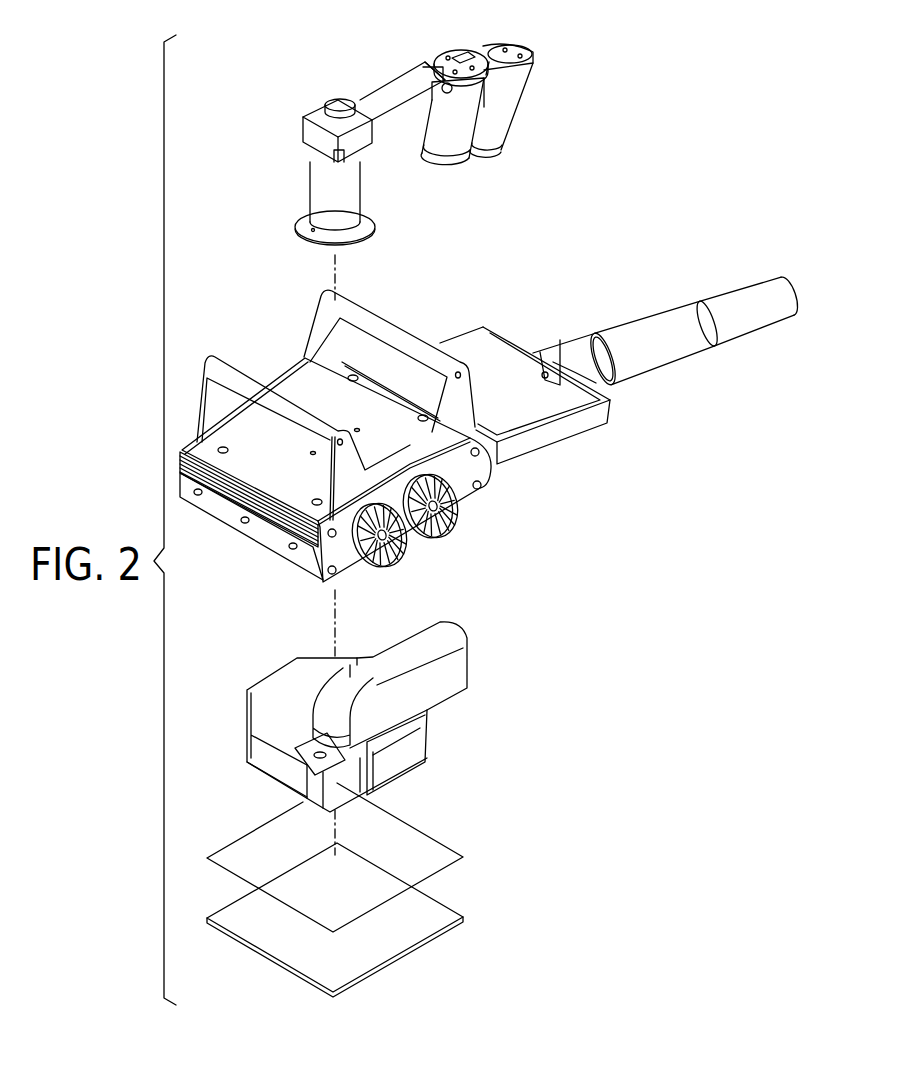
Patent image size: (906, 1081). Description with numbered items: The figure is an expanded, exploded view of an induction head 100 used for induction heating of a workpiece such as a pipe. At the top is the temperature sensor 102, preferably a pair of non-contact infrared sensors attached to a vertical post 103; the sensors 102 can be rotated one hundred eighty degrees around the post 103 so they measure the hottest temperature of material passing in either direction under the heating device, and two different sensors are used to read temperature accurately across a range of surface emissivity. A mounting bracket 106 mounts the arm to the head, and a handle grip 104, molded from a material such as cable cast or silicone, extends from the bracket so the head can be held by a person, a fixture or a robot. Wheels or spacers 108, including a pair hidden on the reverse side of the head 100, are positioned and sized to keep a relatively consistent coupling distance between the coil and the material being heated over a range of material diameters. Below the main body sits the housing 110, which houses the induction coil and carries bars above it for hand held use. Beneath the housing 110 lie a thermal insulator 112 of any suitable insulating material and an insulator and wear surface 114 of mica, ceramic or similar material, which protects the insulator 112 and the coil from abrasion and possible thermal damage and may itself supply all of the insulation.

The induction head 100 is at (697, 105).
The temperature sensor 102 is at (507, 130).
The vertical post 103 is at (311, 183).
The handle grip 104 is at (641, 318).
The mounting bracket 106 is at (548, 437).
The wheels or spacers 108 is at (395, 553).
The housing 110 is at (405, 757).
The thermal insulator 112 is at (428, 856).
The insulator and wear surface 114 is at (428, 916).